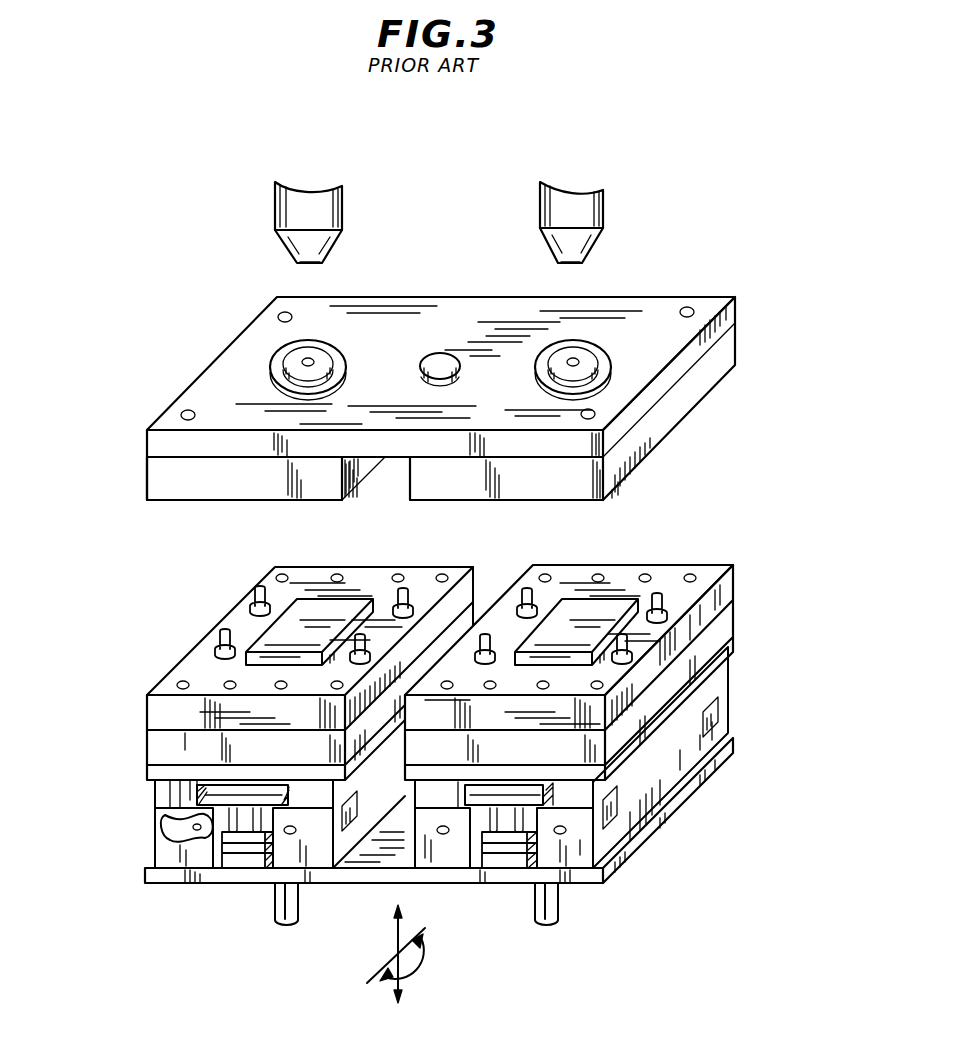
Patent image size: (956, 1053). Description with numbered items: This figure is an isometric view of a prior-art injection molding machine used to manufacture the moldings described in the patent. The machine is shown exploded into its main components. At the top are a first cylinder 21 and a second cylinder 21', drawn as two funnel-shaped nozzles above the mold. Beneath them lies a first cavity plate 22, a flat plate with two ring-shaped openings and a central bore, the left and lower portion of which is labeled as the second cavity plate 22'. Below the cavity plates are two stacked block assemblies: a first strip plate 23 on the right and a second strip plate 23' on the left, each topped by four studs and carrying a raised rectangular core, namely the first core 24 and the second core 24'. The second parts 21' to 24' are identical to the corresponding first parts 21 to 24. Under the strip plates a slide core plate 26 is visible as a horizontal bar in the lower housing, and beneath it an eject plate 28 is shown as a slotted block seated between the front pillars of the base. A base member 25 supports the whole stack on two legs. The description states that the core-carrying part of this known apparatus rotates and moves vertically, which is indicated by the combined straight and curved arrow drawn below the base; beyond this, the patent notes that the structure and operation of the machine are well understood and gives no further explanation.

The first cylinder 21 is at (600, 222).
The second cylinder 21' is at (335, 222).
The first cavity plate 22 is at (448, 398).
The second cavity plate 22' is at (237, 478).
The first strip plate 23 is at (569, 697).
The second strip plate 23' is at (310, 699).
The first core 24 is at (576, 595).
The second core 24' is at (309, 597).
The mold base 25 is at (735, 622).
The slide core plate 26 is at (200, 790).
The eject plate 28 is at (240, 847).